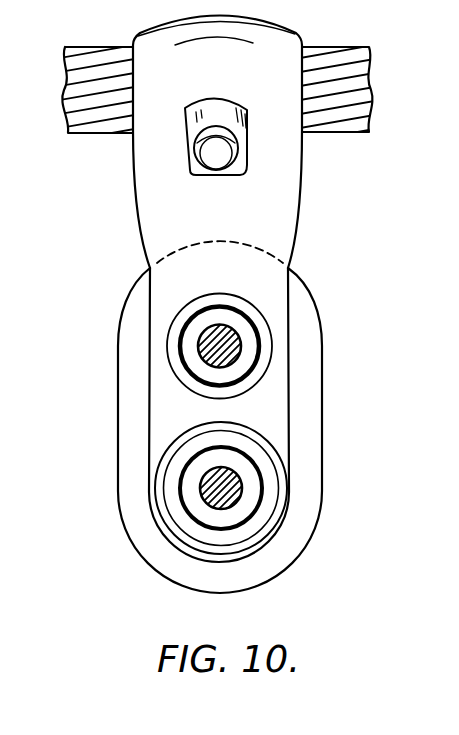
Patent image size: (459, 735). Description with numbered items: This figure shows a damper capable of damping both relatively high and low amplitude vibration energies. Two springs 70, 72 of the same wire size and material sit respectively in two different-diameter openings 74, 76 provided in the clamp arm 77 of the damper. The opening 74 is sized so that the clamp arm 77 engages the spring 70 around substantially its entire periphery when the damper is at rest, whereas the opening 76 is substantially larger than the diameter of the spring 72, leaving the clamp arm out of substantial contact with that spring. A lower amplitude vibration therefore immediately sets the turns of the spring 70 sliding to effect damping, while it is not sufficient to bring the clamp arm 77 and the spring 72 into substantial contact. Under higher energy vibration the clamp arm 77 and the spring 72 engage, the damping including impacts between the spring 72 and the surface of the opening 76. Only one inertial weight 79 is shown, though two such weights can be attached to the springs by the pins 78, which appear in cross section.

The spring 70 is at (264, 347).
The spring 72 is at (253, 455).
The opening 74 is at (173, 320).
The opening 76 is at (281, 472).
The clamp arm 77 is at (157, 215).
The pin 78 is at (228, 338).
The inertial weight 79 is at (118, 435).